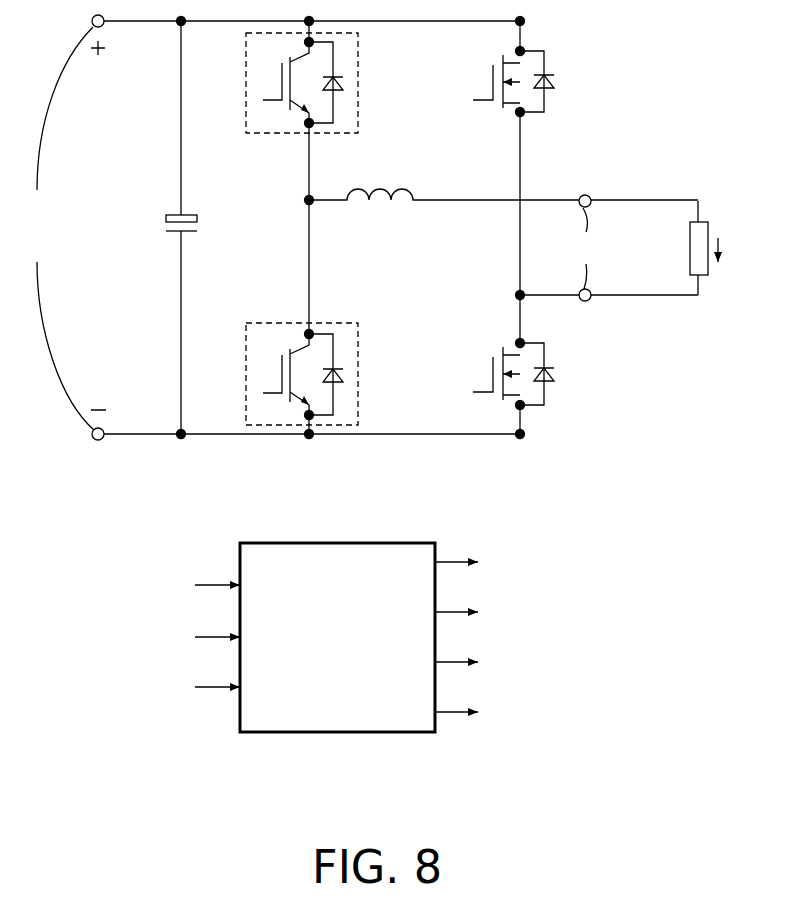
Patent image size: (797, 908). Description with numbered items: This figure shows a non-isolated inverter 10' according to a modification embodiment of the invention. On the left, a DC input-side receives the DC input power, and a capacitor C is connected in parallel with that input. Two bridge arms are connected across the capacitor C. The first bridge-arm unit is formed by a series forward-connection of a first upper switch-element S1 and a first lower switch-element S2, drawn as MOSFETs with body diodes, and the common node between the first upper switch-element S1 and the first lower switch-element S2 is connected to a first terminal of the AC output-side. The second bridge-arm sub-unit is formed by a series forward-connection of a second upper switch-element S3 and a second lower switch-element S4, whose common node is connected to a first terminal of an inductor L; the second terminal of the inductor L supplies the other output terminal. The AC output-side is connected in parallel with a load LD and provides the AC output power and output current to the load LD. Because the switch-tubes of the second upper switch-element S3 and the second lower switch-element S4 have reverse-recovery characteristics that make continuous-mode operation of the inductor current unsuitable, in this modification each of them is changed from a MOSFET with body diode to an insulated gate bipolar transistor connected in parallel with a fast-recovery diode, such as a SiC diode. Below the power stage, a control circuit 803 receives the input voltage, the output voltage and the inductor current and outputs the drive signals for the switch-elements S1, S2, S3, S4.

The non-isolated inverter 10' is at (389, 394).
The control circuit 803 is at (345, 732).
The first upper switch-element S1 is at (503, 82).
The first lower switch-element S2 is at (503, 374).
The second upper switch-element S3 is at (245, 103).
The second lower switch-element S4 is at (246, 382).
The capacitor C is at (168, 227).
The inductor L is at (503, 174).
The load LD is at (700, 220).